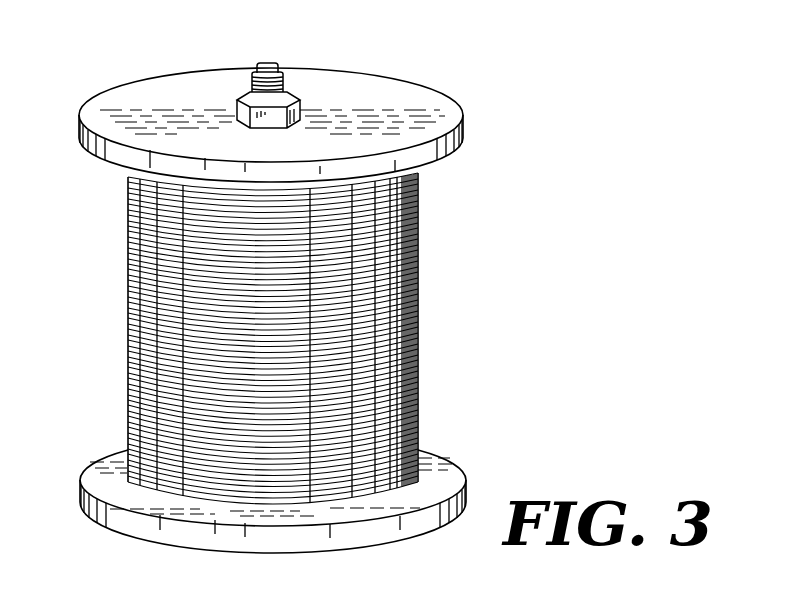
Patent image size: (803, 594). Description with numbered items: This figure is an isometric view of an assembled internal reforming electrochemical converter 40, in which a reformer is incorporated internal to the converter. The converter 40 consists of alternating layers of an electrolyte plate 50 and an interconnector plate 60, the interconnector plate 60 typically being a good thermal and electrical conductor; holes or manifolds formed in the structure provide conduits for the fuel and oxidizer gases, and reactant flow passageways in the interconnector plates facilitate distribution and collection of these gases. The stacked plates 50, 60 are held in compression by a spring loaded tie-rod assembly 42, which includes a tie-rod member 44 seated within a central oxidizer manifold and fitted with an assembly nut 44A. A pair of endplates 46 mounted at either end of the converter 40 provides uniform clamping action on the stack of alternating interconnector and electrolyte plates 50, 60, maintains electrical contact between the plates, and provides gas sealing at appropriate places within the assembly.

The internal reforming electrochemical converter 40 is at (438, 55).
The spring loaded tie-rod assembly 42 is at (205, 60).
The tie-rod member 44 is at (271, 62).
The assembly nut 44A is at (300, 110).
The endplates 46 is at (122, 97).
The electrolyte plate 50 is at (415, 252).
The interconnector plate 60 is at (413, 283).